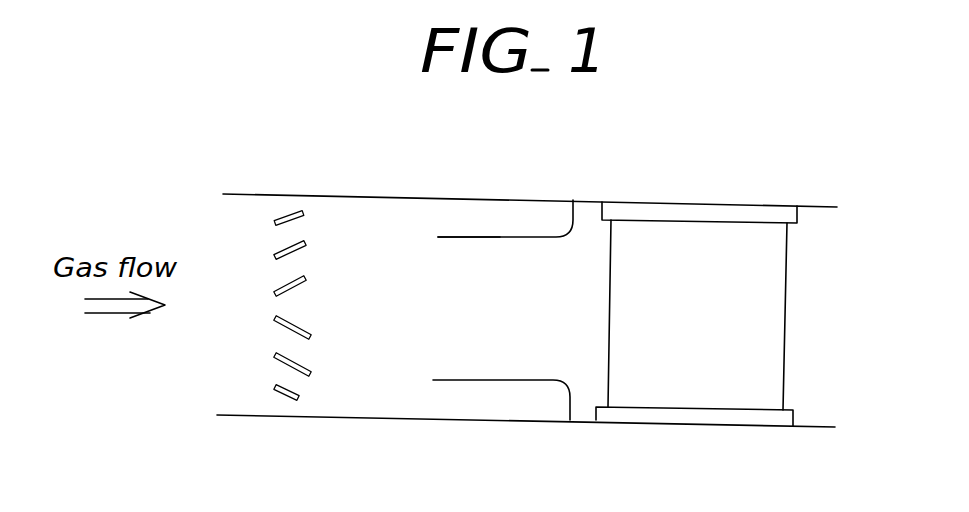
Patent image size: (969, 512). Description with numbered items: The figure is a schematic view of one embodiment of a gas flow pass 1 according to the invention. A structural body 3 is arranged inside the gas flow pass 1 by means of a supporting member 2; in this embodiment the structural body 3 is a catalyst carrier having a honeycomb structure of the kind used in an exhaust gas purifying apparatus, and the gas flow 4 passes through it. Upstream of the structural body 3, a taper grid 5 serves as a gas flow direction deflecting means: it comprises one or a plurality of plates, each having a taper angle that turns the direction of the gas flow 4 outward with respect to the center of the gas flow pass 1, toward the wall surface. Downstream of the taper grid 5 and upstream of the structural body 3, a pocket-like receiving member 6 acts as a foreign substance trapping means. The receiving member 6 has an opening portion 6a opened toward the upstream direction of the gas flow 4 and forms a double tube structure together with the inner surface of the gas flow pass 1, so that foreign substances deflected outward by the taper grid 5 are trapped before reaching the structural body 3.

The gas flow pass 1 is at (714, 282).
The supporting member 2 is at (772, 212).
The structural body 3 is at (768, 370).
The gas flow 4 is at (107, 315).
The taper grid 5 is at (283, 396).
The receiving member 6 is at (507, 237).
The opening portion 6a is at (443, 217).